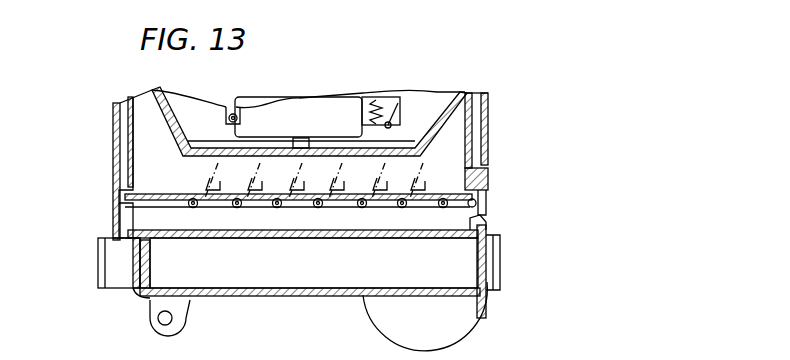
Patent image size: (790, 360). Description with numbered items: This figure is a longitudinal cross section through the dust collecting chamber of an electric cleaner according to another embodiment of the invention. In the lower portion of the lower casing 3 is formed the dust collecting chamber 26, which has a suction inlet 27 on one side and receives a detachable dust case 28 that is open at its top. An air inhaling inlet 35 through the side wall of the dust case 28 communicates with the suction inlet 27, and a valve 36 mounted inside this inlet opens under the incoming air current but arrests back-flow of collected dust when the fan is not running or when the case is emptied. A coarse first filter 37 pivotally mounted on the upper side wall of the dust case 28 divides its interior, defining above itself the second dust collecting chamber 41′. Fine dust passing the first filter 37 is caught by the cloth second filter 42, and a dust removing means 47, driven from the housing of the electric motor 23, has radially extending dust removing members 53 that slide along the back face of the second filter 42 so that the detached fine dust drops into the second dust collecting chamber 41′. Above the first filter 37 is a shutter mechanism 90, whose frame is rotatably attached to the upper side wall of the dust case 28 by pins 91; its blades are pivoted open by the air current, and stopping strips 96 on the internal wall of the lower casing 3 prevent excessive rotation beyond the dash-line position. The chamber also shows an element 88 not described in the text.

The lower casing 3 is at (113, 128).
The electric motor 23 is at (333, 107).
The dust collecting chamber 26 is at (118, 214).
The suction inlet 27 is at (100, 266).
The dust case 28 is at (316, 292).
The air inhaling inlet 35 is at (140, 290).
The valve 36 is at (148, 275).
The first filter 37 is at (321, 232).
The second dust collecting chamber 41′ is at (314, 263).
The second filter 42 is at (440, 100).
The dust removing means 47 is at (229, 108).
The dust removing members 53 is at (204, 148).
The chain 88 is at (378, 208).
The shutter mechanism 90 is at (185, 196).
The pins 91 is at (478, 205).
The stopping strips 96 is at (425, 180).